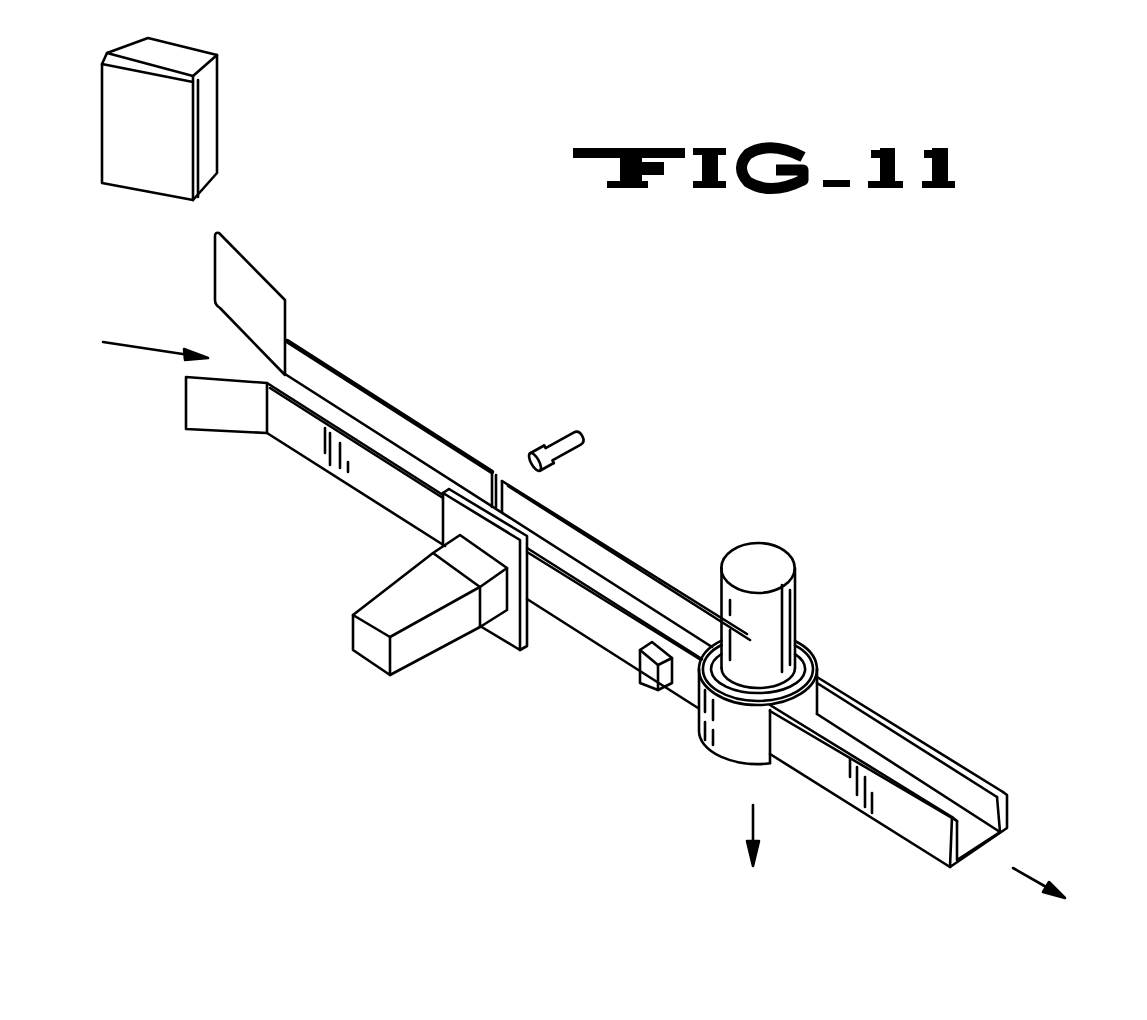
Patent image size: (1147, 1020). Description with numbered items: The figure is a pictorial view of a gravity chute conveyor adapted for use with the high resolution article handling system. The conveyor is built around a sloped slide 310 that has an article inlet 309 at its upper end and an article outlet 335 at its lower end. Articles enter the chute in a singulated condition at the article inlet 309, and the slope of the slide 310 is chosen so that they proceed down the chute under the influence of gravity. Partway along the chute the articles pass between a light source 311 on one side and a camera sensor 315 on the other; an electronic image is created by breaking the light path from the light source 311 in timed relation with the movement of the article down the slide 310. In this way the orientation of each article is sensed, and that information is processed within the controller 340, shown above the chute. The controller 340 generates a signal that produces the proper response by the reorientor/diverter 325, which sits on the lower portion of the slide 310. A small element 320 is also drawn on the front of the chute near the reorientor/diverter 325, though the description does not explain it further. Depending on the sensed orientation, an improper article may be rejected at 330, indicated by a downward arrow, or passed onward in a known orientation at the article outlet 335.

The article inlet 309 is at (165, 312).
The slide 310 is at (357, 385).
The light source 311 is at (585, 435).
The camera sensor 315 is at (407, 587).
The small block 320 is at (638, 677).
The reorientor/diverter 325 is at (798, 590).
The reject location 330 is at (753, 822).
The article outlet 335 is at (1028, 872).
The controller 340 is at (210, 117).